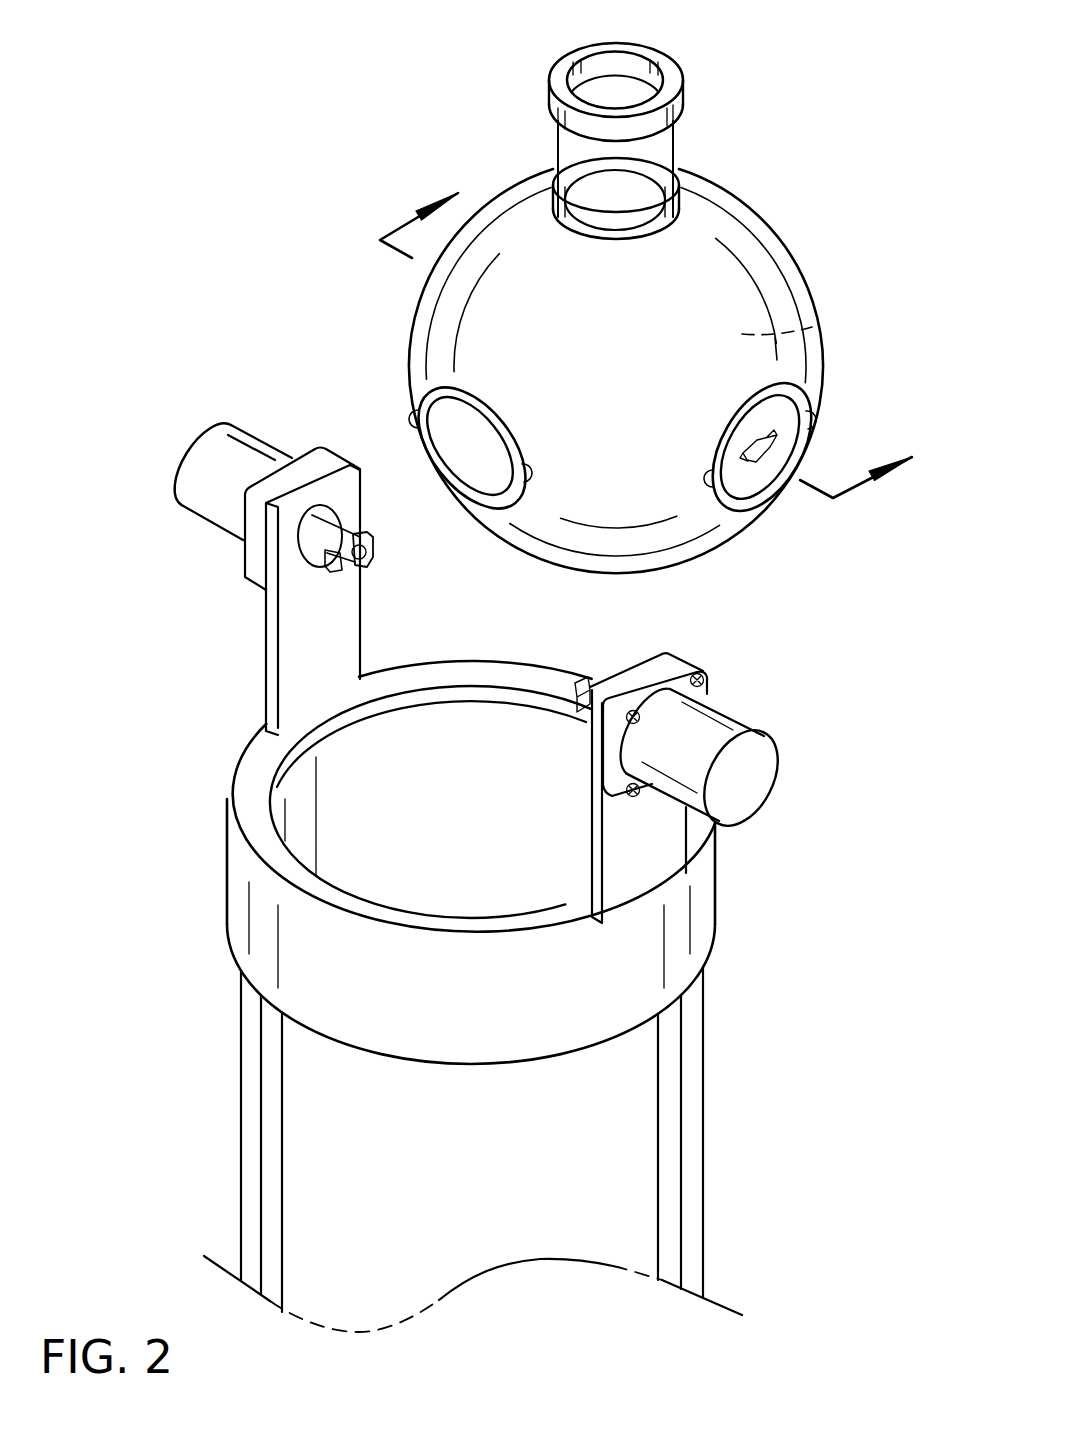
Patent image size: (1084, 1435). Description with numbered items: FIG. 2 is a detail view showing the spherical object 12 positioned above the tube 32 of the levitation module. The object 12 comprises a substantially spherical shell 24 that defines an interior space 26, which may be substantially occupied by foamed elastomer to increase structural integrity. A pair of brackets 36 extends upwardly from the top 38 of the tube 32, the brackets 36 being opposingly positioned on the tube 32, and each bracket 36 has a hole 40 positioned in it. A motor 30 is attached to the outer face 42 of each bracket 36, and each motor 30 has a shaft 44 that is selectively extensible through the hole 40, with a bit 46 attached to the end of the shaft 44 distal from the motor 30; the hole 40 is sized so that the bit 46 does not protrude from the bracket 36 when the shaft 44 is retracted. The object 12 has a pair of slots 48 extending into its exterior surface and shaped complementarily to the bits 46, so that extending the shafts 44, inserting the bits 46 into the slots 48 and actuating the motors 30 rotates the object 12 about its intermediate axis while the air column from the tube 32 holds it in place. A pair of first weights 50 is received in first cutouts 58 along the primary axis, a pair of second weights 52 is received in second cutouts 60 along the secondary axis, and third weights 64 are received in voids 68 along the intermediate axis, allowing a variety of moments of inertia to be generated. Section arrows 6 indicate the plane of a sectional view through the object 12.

The object 12 is at (773, 227).
The shell 24 is at (797, 257).
The interior space 26 is at (815, 325).
The second weights 52 is at (674, 52).
The second cutouts 60 is at (678, 198).
The first cutouts 58 is at (461, 385).
The first weights 50 is at (443, 400).
The slots 48 is at (763, 455).
The third weights 64 is at (733, 500).
The voids 68 is at (760, 500).
The section line 6- 6 is at (659, 329).
The top 38 is at (262, 848).
The tube 32 is at (241, 1151).
The brackets 36 is at (270, 688).
The motors 30 is at (233, 425).
The hole 40 is at (333, 507).
The shaft 44 is at (320, 535).
The bits 46 is at (333, 573).
The outer face 42 is at (655, 856).